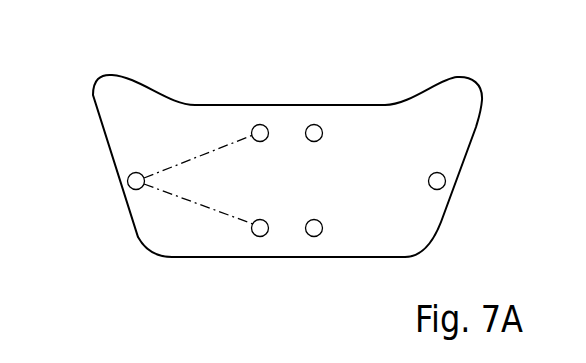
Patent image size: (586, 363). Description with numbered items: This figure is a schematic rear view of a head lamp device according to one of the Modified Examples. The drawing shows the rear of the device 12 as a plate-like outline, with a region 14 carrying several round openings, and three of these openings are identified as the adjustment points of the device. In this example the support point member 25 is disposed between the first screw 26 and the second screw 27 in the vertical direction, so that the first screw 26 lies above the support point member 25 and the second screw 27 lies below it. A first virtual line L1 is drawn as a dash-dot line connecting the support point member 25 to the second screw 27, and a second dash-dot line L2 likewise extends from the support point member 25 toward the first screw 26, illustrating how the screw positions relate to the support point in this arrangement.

The plate member 12 is at (460, 77).
The mounting holes 14 is at (380, 125).
The support point member 25 is at (128, 181).
The first screw 26 is at (259, 125).
The second screw 27 is at (262, 236).
The first virtual line L1 is at (190, 207).
The upper reference line L2 is at (199, 153).